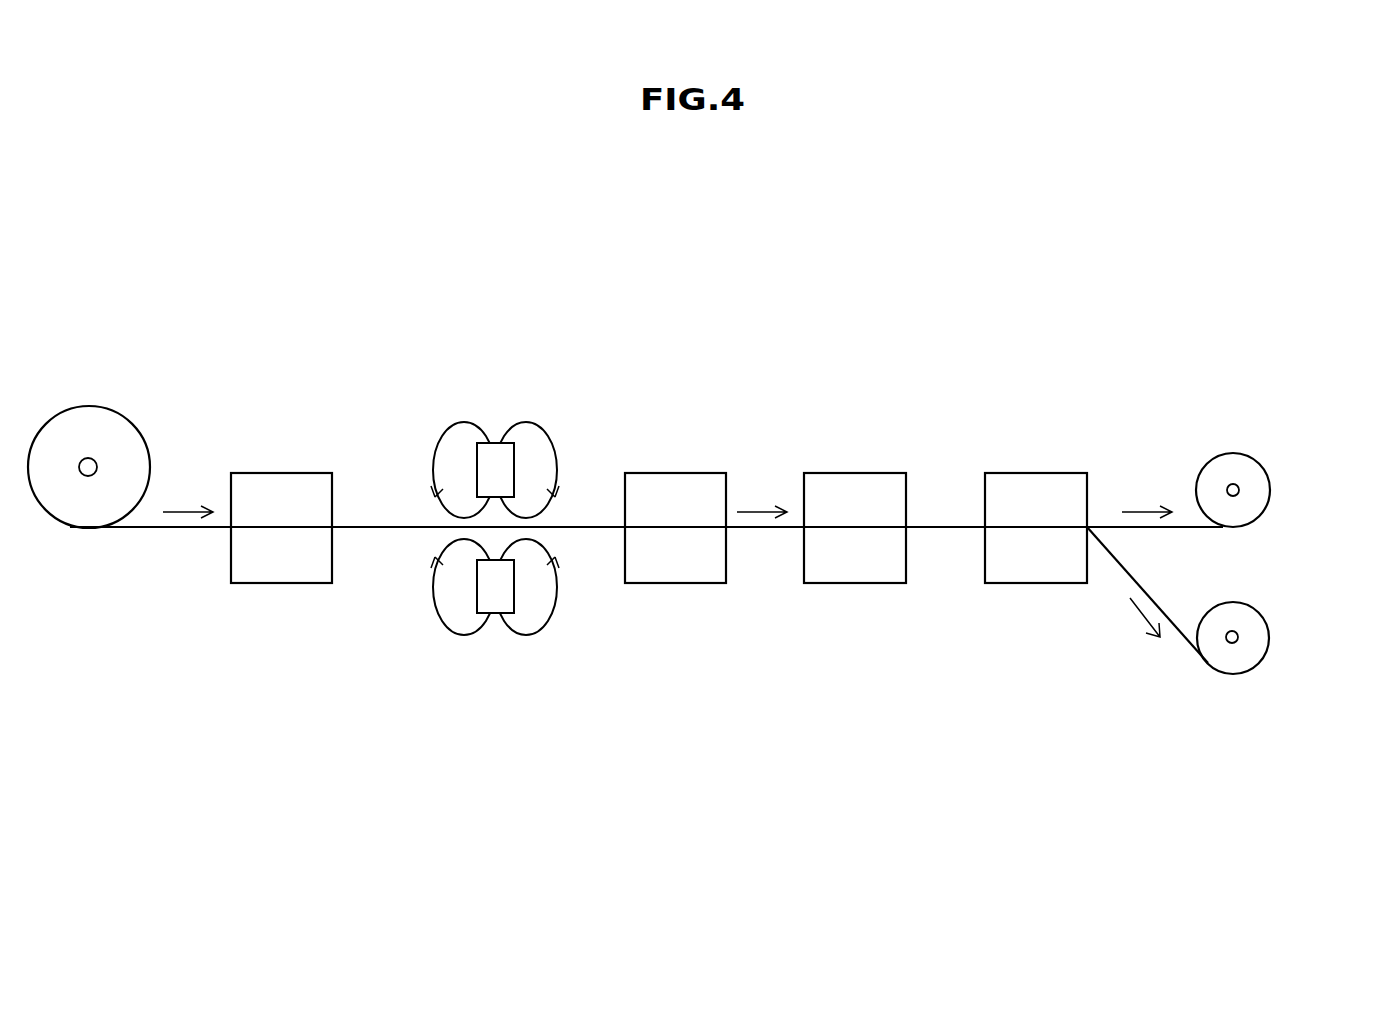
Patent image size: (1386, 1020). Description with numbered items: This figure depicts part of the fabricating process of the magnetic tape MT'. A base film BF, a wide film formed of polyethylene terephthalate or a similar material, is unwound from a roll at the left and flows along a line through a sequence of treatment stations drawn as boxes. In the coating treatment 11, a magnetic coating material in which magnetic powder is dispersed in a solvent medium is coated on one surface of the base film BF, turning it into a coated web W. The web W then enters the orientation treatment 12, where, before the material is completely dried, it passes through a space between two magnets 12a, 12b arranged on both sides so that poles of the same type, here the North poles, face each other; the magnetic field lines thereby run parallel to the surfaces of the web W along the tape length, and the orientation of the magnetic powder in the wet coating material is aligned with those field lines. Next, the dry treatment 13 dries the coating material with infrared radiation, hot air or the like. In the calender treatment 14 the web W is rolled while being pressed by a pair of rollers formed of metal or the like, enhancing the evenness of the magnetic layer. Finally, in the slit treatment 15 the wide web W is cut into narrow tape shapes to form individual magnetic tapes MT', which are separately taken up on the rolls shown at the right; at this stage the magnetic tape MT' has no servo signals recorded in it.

The base film BF is at (70, 409).
The web W is at (383, 527).
The coating treatment 11 is at (258, 473).
The orientation treatment 12 is at (554, 454).
The magnet 12a is at (514, 455).
The magnet 12b is at (514, 600).
The dry treatment 13 is at (650, 473).
The calender treatment 14 is at (827, 473).
The slit treatment 15 is at (1037, 473).
The magnetic tape MT' is at (1285, 595).